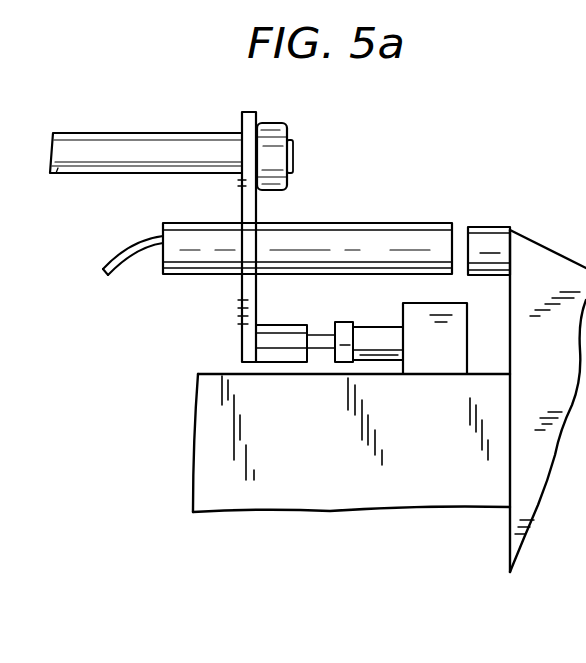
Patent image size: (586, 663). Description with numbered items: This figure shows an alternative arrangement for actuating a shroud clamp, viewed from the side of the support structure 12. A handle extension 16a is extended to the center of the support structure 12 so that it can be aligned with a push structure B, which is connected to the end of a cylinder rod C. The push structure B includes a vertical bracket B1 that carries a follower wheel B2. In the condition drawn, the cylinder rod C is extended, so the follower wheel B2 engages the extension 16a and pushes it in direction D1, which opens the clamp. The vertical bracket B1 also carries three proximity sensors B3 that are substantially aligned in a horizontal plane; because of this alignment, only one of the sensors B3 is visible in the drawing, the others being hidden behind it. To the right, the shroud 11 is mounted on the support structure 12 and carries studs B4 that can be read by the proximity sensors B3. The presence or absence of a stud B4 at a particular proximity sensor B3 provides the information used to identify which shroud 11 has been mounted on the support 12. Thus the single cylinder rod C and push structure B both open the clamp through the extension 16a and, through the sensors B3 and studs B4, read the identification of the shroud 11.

The cylinder rod C is at (110, 152).
The push structure B is at (337, 188).
The vertical bracket B1 is at (243, 292).
The follower wheel B2 is at (304, 333).
The proximity sensors B3 is at (366, 243).
The studs B4 is at (480, 247).
The shroud 11 is at (524, 260).
The support structure 12 is at (320, 503).
The extension 16a is at (381, 350).
The direction D1 is at (498, 128).